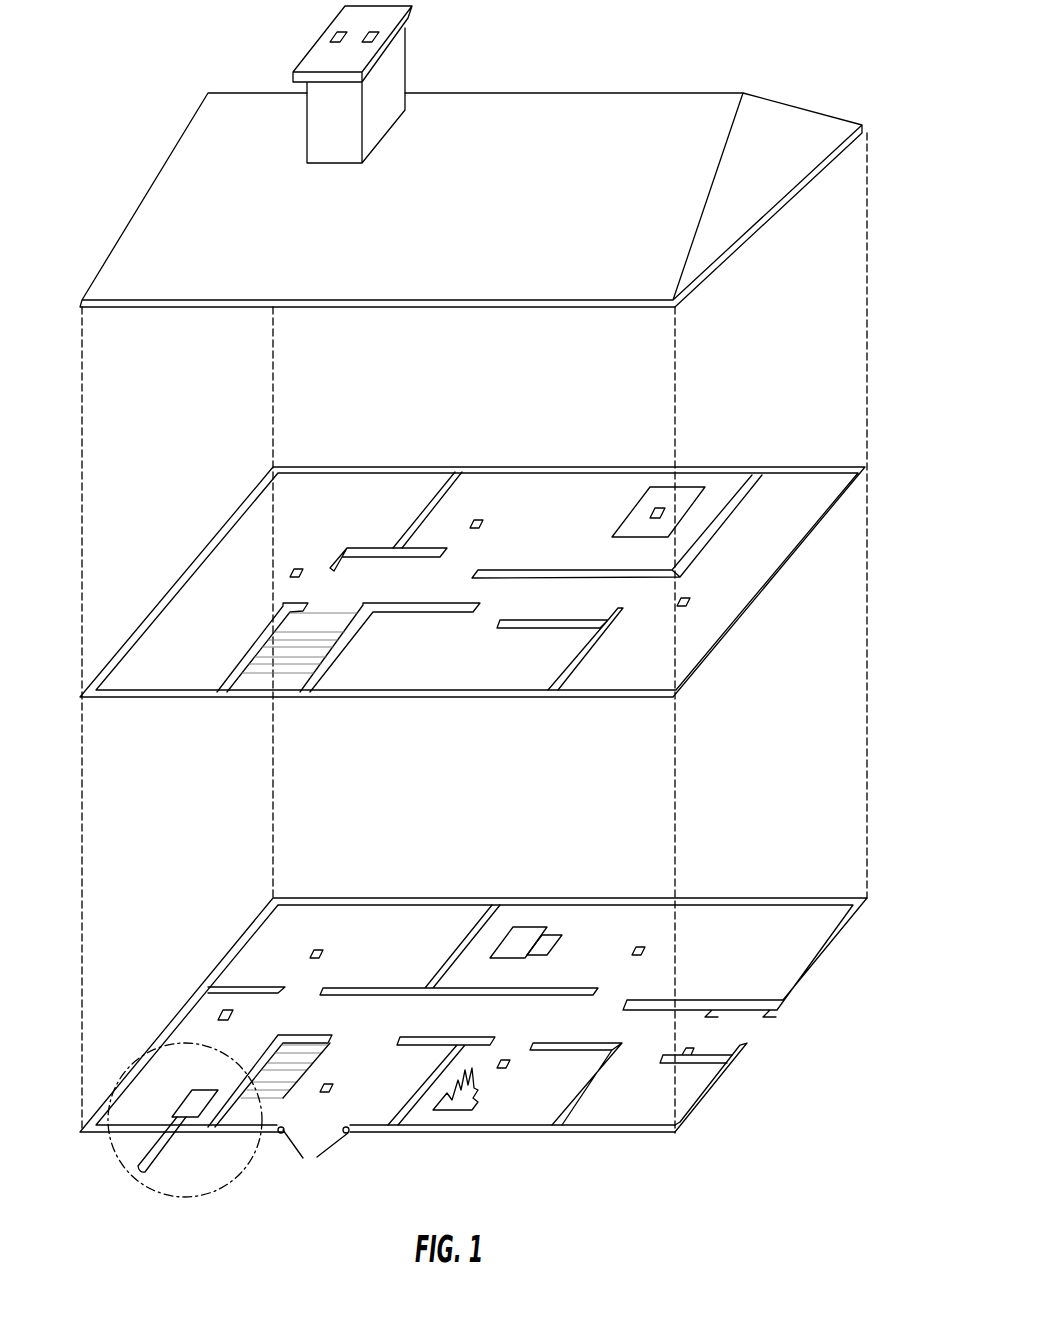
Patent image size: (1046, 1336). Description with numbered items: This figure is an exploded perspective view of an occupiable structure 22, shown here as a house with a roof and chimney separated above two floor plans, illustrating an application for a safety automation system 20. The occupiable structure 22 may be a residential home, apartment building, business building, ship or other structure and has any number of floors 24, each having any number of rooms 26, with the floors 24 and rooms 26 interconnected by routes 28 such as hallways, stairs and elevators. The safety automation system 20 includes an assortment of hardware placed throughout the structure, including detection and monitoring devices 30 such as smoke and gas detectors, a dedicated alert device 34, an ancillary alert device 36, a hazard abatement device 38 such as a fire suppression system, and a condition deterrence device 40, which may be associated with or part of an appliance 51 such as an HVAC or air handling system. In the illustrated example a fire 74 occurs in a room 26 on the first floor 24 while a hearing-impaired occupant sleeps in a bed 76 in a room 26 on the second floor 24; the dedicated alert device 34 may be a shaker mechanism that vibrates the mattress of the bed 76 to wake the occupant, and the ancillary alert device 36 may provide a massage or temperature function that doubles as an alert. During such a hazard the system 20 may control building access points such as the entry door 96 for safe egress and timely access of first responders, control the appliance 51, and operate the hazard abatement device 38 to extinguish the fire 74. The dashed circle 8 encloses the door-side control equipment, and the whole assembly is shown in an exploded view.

The detection system 8 is at (213, 1183).
The safety automation system 20 is at (110, 128).
The occupiable structure 22 is at (228, 511).
The floor 24 is at (797, 543).
The room 26 is at (405, 653).
The route 28 is at (340, 613).
The detection and/or monitoring device 30 is at (299, 568).
The dedicated alert device 34 is at (654, 509).
The ancillary alert device 36 is at (553, 932).
The hazard abatement device 38 is at (216, 1013).
The condition deterrence device 40 is at (208, 1090).
The appliance 51 is at (167, 1143).
The fire 74 is at (480, 1098).
The bed 76 is at (688, 487).
The entry door 96 is at (337, 1147).